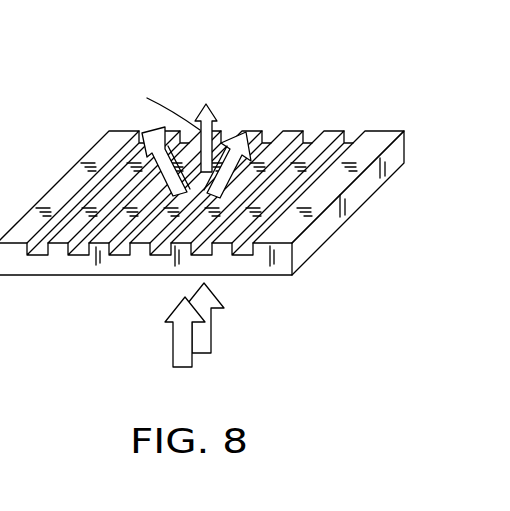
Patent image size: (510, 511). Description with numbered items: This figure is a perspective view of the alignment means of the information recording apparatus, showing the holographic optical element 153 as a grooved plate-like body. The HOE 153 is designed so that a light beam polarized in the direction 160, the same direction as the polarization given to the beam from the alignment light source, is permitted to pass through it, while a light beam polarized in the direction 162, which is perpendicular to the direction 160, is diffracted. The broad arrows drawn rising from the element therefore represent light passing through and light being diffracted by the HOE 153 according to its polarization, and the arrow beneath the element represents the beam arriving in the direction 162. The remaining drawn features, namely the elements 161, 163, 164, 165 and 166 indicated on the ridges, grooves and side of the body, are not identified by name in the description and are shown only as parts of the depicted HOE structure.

The holographic optical element 153 is at (50, 178).
The polarization direction of transmitted light 160 is at (202, 234).
The incident light 161 is at (203, 127).
The polarization direction of diffracted light 162 is at (177, 345).
The diffused/reflected light 163 is at (153, 130).
The ridge (prism) 164 is at (312, 128).
The side surface 165 is at (331, 225).
The groove 166 is at (41, 256).